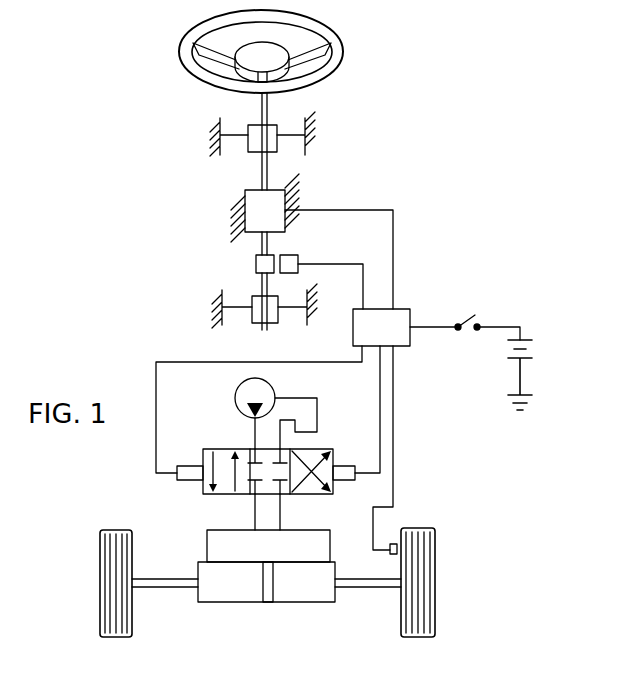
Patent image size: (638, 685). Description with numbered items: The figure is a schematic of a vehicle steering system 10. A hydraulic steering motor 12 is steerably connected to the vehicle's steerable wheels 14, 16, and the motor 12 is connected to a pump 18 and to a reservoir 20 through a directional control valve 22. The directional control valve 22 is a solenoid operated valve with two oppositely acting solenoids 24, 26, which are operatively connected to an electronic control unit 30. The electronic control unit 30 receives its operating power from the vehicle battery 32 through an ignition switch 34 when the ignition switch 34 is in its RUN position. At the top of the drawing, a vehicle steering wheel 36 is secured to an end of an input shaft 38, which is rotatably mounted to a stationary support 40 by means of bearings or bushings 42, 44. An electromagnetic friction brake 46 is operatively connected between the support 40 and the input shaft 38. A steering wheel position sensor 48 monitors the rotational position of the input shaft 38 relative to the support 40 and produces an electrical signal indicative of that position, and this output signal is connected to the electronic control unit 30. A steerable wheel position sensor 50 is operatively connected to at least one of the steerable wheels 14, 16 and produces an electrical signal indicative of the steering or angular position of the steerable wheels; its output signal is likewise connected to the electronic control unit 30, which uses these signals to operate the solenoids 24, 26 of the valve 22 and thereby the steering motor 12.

The steering system 10 is at (128, 235).
The hydraulic steering motor 12 is at (257, 609).
The steerable wheel 14 is at (116, 637).
The steerable wheel 16 is at (422, 637).
The pump 18 is at (236, 398).
The reservoir 20 is at (320, 432).
The directional control valve 22 is at (232, 499).
The solenoid 24 is at (190, 480).
The solenoid 26 is at (345, 481).
The electronic control unit 30 is at (403, 306).
The vehicle battery 32 is at (533, 352).
The ignition switch 34 is at (480, 313).
The vehicle steering wheel 36 is at (343, 52).
The input shaft 38 is at (268, 170).
The stationary support 40 is at (218, 130).
The bearing or bushing 42 is at (280, 126).
The bearing or bushing 44 is at (252, 300).
The electromagnetic friction brake 46 is at (257, 207).
The steering wheel position sensor 48 is at (290, 251).
The steerable wheel position sensor 50 is at (393, 540).